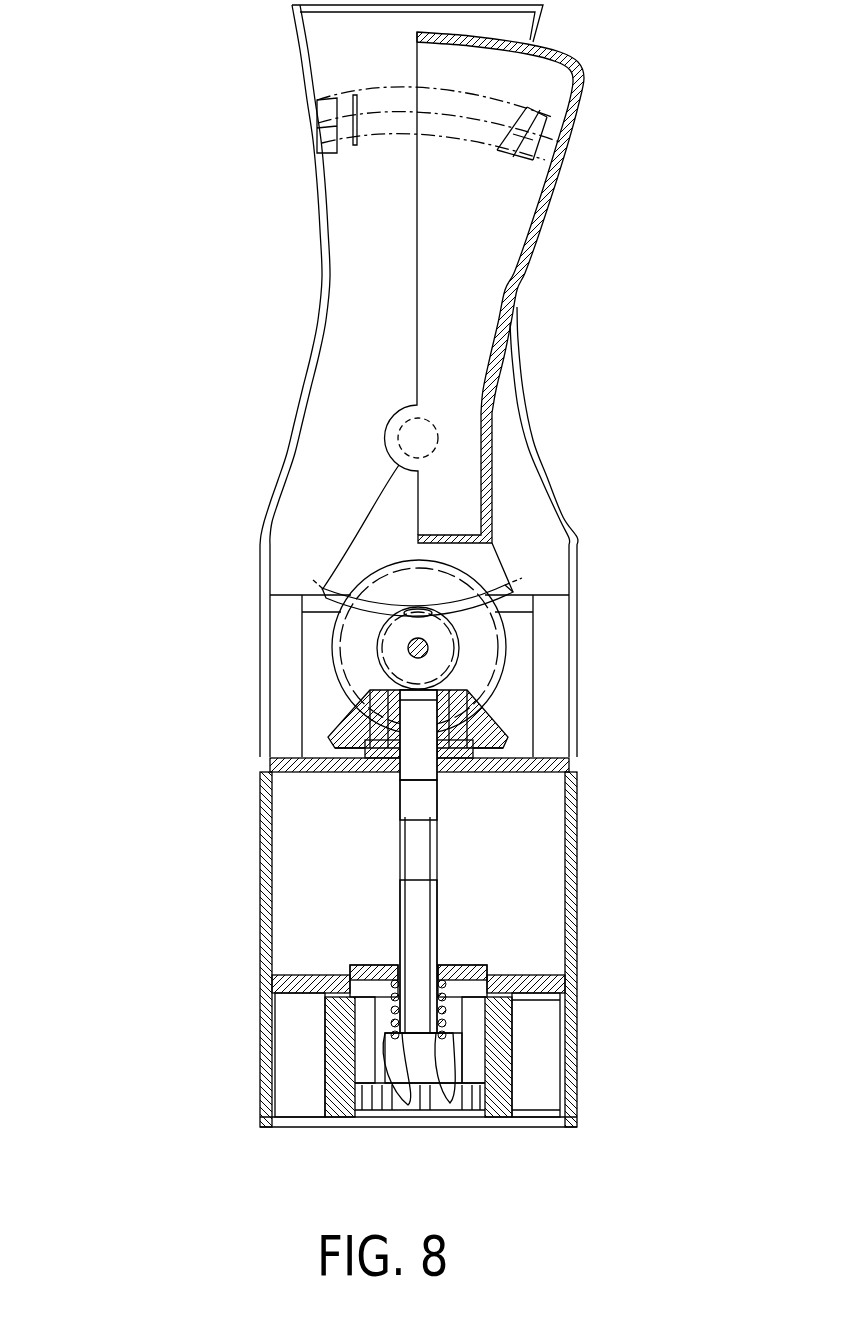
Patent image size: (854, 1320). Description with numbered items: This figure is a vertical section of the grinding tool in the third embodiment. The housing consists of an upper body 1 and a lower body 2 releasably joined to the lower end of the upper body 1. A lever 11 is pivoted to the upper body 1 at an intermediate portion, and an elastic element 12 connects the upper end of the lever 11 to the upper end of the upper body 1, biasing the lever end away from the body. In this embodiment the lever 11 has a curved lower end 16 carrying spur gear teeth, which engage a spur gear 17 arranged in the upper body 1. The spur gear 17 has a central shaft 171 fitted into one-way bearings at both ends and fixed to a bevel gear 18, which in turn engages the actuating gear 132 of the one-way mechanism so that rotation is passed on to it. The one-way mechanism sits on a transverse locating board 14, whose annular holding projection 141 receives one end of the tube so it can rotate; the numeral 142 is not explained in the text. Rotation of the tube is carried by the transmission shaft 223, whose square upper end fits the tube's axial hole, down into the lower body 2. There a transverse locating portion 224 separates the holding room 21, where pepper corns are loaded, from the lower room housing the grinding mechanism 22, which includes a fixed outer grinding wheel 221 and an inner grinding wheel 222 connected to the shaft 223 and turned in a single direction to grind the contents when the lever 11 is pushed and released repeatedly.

The upper body 1 is at (300, 282).
The lever 11 is at (535, 225).
The elastic element 12 is at (353, 92).
The curved lower end 16 is at (522, 578).
The spur gear 17 is at (457, 628).
The central shaft 171 is at (428, 648).
The bevel gear 18 is at (503, 680).
The actuating gear 132 is at (500, 727).
The transverse locating board 14 is at (493, 767).
The annular holding projection 141 is at (412, 765).
The shaft lower section 142 is at (405, 785).
The holding room 21 is at (290, 925).
The transmission shaft 223 is at (418, 903).
The transverse locating portion 224 is at (378, 967).
The lower body 2 is at (588, 960).
The outer grinding wheel 221 is at (328, 1048).
The grinding mechanism 22 is at (532, 1050).
The inner grinding wheel 222 is at (365, 1073).